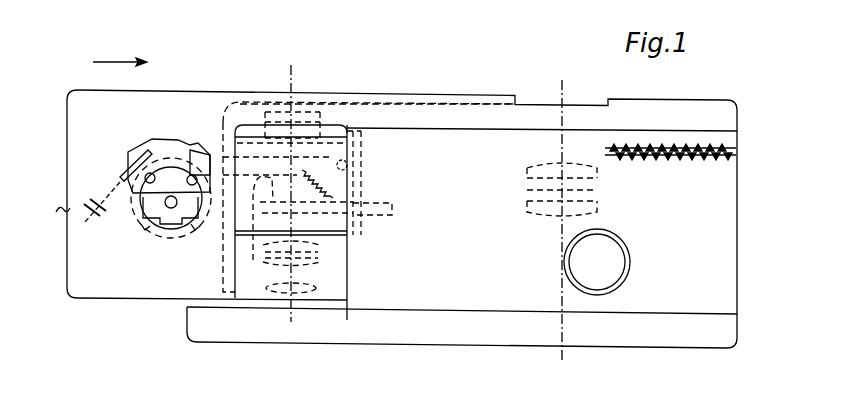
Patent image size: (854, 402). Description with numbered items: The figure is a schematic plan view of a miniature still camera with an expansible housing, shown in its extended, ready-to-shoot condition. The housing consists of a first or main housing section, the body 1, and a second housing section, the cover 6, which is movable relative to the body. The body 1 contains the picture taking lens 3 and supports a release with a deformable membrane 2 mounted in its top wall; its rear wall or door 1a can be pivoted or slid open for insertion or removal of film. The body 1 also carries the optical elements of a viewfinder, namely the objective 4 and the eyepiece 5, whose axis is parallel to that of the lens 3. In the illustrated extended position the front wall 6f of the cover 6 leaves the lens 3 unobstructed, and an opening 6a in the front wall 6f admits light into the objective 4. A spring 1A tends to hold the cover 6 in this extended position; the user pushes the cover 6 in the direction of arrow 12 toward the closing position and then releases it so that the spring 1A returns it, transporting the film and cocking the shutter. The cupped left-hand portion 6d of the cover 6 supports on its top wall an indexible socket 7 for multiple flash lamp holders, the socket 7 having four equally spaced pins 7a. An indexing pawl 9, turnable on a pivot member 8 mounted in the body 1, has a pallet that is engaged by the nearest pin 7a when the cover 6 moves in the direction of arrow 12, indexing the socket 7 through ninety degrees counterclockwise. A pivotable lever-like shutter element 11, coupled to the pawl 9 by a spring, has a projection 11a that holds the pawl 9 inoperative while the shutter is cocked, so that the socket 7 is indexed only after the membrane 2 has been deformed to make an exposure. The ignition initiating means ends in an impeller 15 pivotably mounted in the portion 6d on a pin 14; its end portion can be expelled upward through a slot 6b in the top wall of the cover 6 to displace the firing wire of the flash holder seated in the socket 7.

The main housing section 1 is at (738, 206).
The rear wall or door 1a is at (652, 343).
The spring 1A is at (675, 163).
The deformable membrane 2 is at (622, 268).
The picture taking lens 3 is at (598, 197).
The objective 4 is at (320, 136).
The eyepiece 5 is at (300, 258).
The cover 6 is at (199, 93).
The opening 6a is at (268, 95).
The slot 6b is at (151, 161).
The left-hand portion of the cover 6d is at (50, 214).
The front wall 6f is at (406, 98).
The socket 7 is at (168, 240).
The pins 7a is at (147, 236).
The pivot member 8 is at (352, 160).
The indexing pawl 9 is at (197, 152).
The lever-like shutter element 11 is at (376, 216).
The projection of the shutter element 11a is at (292, 211).
The arrow 12 is at (140, 66).
The pin 14 is at (102, 224).
The impeller 15 is at (107, 192).